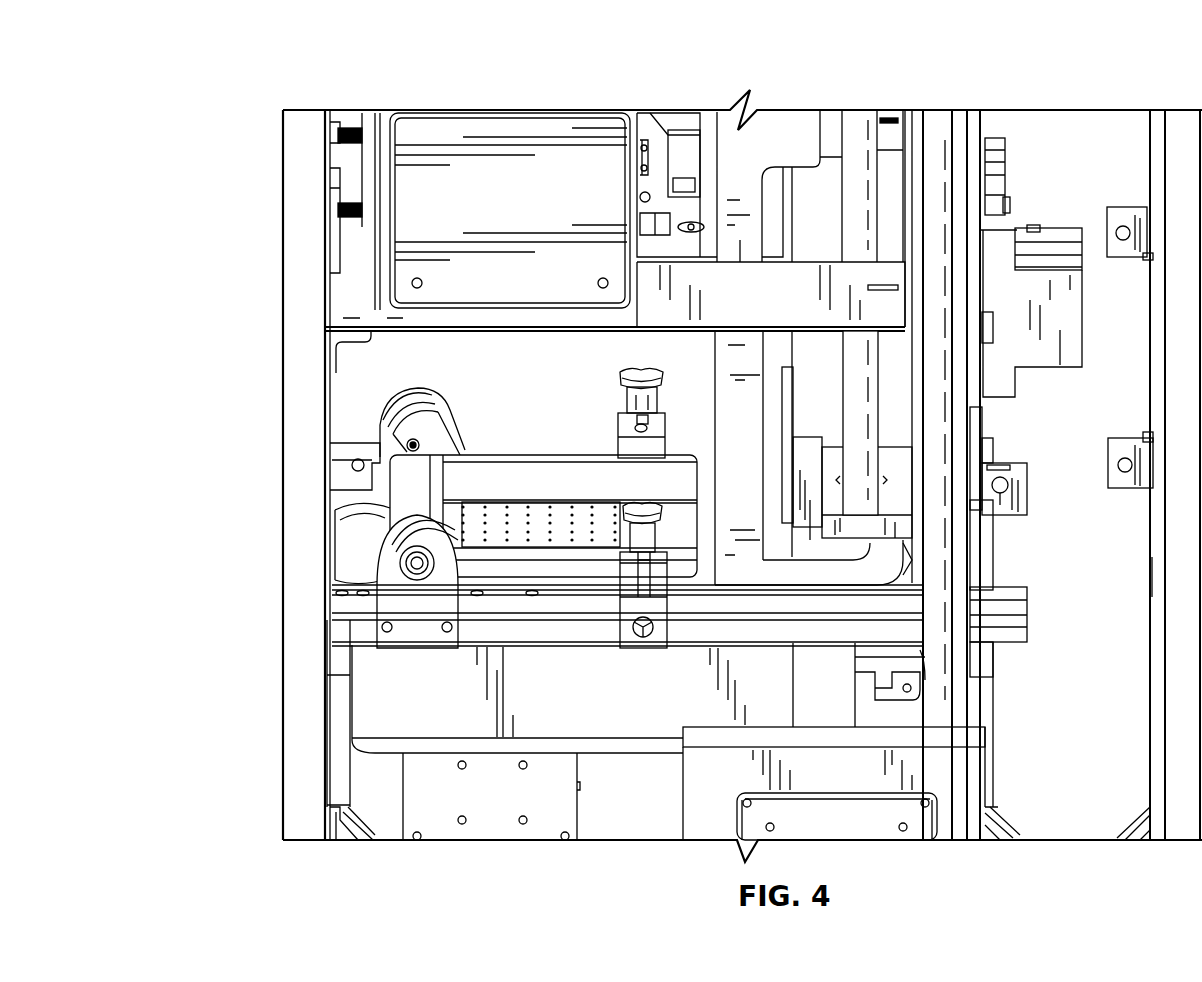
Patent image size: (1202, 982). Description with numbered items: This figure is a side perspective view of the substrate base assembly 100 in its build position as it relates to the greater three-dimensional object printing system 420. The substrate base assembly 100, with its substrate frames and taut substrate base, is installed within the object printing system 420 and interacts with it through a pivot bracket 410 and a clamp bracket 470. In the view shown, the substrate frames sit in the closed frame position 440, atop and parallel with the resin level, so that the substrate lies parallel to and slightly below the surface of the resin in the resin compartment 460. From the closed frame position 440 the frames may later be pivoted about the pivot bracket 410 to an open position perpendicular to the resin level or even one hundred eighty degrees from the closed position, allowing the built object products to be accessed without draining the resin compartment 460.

The substrate base assembly 100 is at (313, 635).
The pivot bracket 410 is at (320, 416).
The 3D object printing system 420 is at (1008, 83).
The closed frame position 440 is at (555, 362).
The resin compartment 460 is at (350, 727).
The clamp bracket 470 is at (620, 428).